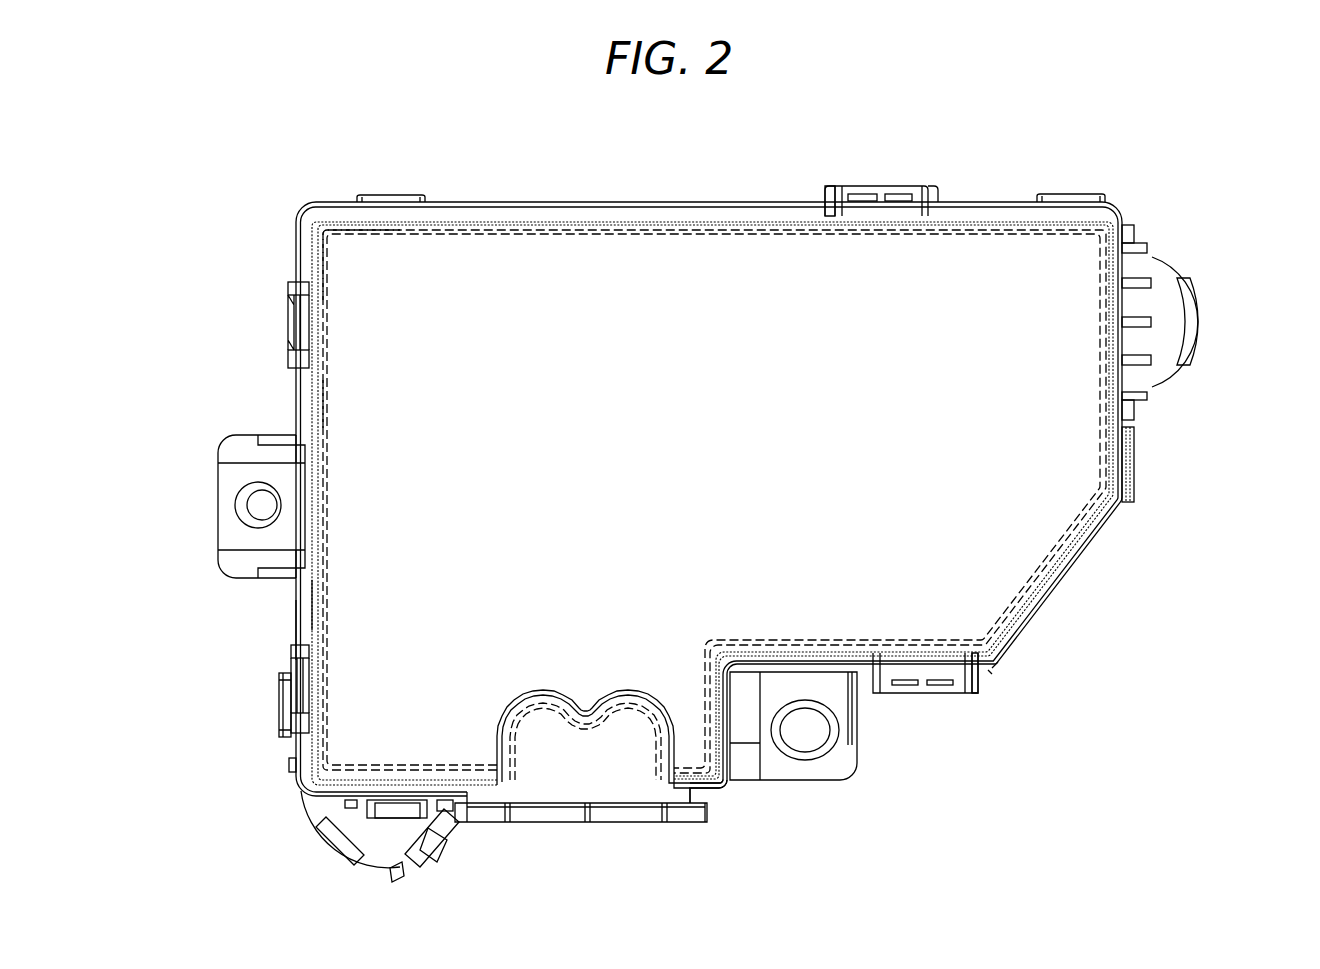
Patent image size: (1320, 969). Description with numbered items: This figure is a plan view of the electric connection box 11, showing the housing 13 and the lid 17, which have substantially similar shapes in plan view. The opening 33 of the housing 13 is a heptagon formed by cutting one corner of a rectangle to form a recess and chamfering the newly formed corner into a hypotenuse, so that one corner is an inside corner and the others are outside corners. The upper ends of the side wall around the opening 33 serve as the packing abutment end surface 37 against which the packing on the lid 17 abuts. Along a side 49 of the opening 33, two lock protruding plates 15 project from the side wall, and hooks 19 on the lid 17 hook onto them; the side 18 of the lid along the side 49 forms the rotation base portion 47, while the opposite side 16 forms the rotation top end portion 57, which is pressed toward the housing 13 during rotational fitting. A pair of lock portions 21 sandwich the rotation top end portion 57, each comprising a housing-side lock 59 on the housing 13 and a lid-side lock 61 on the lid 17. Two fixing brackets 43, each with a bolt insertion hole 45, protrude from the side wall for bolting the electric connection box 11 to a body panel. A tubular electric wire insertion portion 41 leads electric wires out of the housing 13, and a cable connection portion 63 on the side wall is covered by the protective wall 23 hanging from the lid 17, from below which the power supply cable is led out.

The electric connection box 11 is at (247, 175).
The housing 13 is at (301, 790).
The lock protruding plate 15 is at (288, 317).
The side 16 is at (1118, 430).
The lid 17 is at (714, 792).
The side 18 is at (310, 605).
The hook 19 is at (288, 287).
The lock portion 21 is at (920, 115).
The protective wall 23 is at (620, 822).
The opening 33 is at (334, 296).
The packing abutment end surface 37 is at (1105, 332).
The electric wire insertion portion 41 is at (1160, 265).
The fixing bracket 43 is at (240, 435).
The bolt insertion hole 45 is at (250, 505).
The rotation base portion 47 is at (304, 628).
The side 49 is at (323, 408).
The rotation top end portion 57 is at (1123, 377).
The housing-side lock 59 is at (823, 184).
The lid-side lock 61 is at (885, 187).
The cable connection portion 63 is at (553, 823).